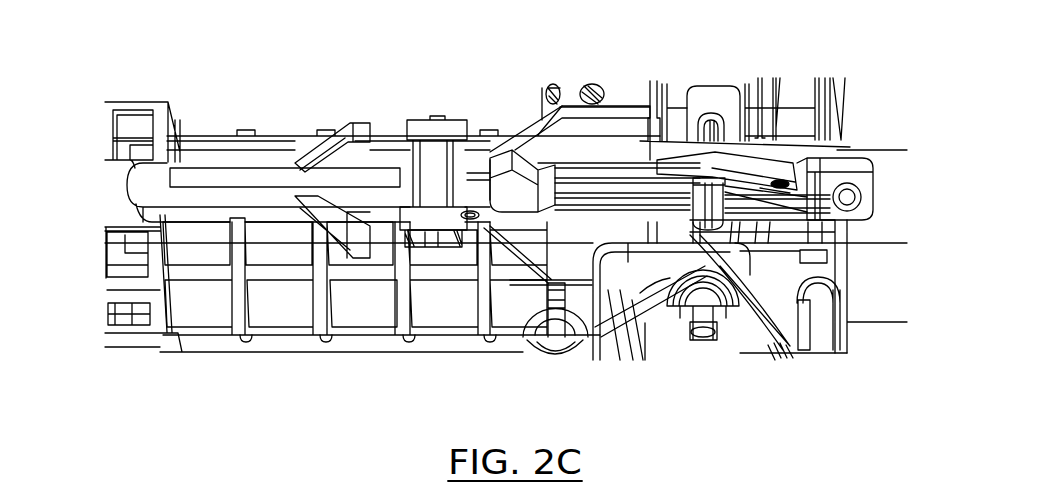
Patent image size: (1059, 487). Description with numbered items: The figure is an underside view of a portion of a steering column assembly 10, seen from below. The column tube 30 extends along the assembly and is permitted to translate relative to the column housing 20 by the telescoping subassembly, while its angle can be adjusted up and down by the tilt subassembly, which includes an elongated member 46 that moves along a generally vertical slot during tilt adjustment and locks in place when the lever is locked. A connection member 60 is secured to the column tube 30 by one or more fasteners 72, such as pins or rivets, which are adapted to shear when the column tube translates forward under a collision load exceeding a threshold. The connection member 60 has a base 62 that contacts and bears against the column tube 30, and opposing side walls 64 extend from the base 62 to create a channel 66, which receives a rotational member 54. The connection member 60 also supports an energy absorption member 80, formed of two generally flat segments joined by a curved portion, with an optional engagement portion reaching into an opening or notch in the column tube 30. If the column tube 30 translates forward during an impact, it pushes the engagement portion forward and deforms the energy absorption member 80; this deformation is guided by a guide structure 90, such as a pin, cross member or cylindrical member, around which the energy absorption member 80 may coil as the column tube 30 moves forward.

The steering column assembly 10 is at (133, 46).
The column housing 20 is at (220, 137).
The energy absorption member 80 is at (289, 168).
The guide structure 90 is at (433, 243).
The fasteners 72 is at (497, 150).
The connection member 60 is at (572, 158).
The side walls 64 is at (622, 200).
The elongated member 46 is at (700, 145).
The rotational member 54 is at (758, 160).
The column tube 30 is at (887, 160).
The base 62 is at (640, 250).
The channel 66 is at (748, 330).